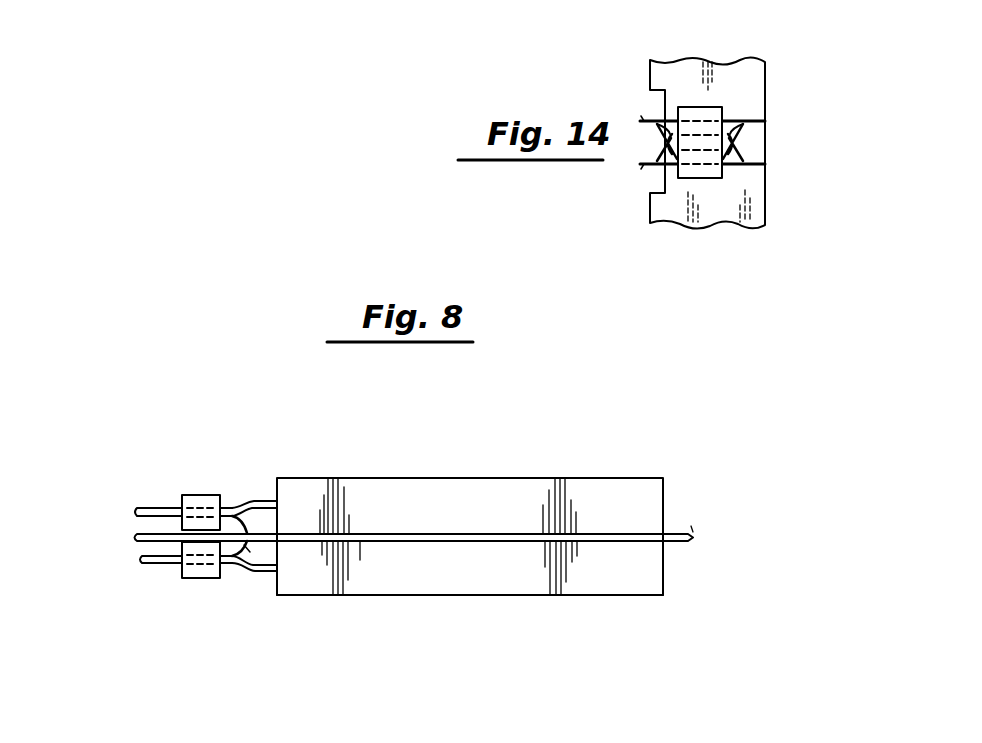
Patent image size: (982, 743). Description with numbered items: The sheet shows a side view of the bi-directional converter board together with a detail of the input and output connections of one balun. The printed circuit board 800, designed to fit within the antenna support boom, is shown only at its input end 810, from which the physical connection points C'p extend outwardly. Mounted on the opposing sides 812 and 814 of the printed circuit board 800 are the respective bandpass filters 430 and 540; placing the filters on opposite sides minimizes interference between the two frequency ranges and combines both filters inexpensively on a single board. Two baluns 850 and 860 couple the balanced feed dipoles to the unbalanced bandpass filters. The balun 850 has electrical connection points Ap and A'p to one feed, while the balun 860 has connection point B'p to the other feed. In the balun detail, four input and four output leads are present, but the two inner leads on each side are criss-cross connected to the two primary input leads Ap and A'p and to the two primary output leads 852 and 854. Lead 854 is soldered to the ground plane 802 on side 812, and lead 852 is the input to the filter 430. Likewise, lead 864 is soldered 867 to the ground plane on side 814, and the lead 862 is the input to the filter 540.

In FIG. 8, the bandpass filter 430 is at (455, 478).
In FIG. 8, the bandpass filter 540 is at (503, 597).
In FIG. 8, the printed circuit board 800 is at (680, 544).
In FIG. 8, the ground plane 802 is at (341, 9).
In FIG. 8, the input end 810 is at (393, 534).
In FIG. 8, the side 812 is at (447, 533).
In FIG. 8, the side 814 is at (481, 543).
In FIG. 14, the balun 850 is at (705, 110).
In FIG. 8, the balun 850 is at (197, 495).
In FIG. 14, the primary output lead 852 is at (757, 124).
In FIG. 8, the primary output lead 852 is at (258, 502).
In FIG. 14, the primary output lead 854 is at (763, 178).
In FIG. 8, the primary output lead 854 is at (241, 510).
In FIG. 8, the balun 860 is at (205, 580).
In FIG. 8, the lead 862 is at (243, 556).
In FIG. 8, the lead 864 is at (256, 566).
In FIG. 8, the solder 867 is at (262, 548).
In FIG. 14, the primary input lead Ap is at (650, 123).
In FIG. 14, the primary input lead A'p is at (670, 197).
In FIG. 8, the primary input lead A'p is at (147, 491).
In FIG. 8, the connection point B'p is at (166, 606).
In FIG. 8, the physical connection point C'p is at (87, 567).